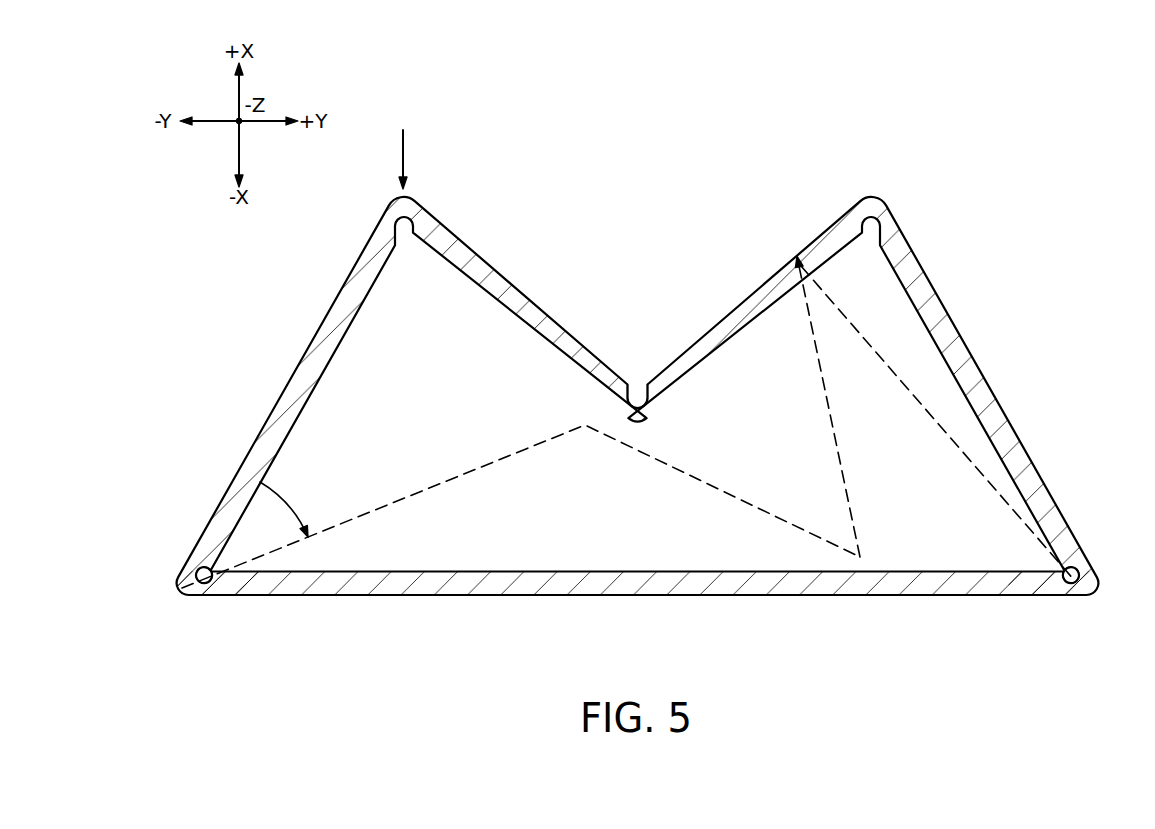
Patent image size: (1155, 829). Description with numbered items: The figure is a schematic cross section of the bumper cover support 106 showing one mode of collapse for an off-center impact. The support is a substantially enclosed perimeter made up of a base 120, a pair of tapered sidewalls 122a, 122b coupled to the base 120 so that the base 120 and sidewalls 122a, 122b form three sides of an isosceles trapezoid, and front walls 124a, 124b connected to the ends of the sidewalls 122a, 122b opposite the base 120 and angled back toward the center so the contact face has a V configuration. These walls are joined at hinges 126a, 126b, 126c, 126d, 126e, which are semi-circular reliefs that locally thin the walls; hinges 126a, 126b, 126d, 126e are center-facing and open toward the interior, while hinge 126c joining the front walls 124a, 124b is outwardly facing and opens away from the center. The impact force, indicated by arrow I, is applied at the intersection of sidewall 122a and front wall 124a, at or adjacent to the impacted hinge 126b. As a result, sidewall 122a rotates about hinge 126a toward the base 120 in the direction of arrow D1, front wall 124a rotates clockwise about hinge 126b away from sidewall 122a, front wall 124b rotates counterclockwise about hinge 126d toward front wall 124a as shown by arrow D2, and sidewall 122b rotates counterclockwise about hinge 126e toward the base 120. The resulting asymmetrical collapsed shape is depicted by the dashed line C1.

The bumper cover support 106 is at (637, 364).
The base 120 is at (413, 597).
The sidewall 122a is at (298, 365).
The sidewall 122b is at (977, 365).
The front wall 124a is at (530, 301).
The front wall 124b is at (740, 304).
The hinge 126a is at (210, 569).
The hinge 126b is at (404, 236).
The hinge 126c is at (636, 393).
The hinge 126d is at (869, 236).
The hinge 126e is at (1064, 567).
The dashed line C1 is at (487, 468).
The arrow D1 is at (288, 495).
The arrow D2 is at (950, 436).
The arrow I is at (403, 153).